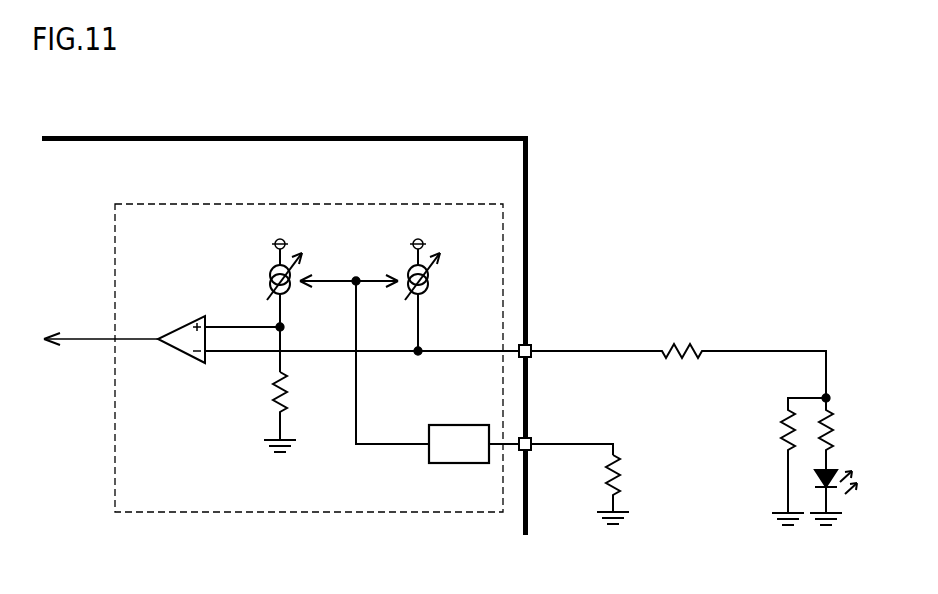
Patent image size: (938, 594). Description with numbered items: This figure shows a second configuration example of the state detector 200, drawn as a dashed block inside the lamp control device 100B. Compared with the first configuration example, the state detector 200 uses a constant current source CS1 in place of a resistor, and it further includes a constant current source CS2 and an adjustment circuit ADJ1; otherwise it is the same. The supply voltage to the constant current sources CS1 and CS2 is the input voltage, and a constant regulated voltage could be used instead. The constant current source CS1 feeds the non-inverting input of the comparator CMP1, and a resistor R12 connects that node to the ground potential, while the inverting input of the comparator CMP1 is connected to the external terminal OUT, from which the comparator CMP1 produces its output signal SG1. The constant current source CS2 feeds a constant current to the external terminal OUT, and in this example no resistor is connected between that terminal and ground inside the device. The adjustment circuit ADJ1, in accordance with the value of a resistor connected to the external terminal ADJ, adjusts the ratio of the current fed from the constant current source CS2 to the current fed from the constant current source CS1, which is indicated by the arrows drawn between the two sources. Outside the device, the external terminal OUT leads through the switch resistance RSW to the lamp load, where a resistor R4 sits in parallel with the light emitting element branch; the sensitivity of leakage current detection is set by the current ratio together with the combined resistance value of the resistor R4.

The lamp control device 100B is at (421, 137).
The state detector 200 is at (373, 203).
The comparator CMP1 is at (190, 316).
The constant current source CS1 is at (291, 285).
The constant current source CS2 is at (429, 285).
The resistor R12 is at (296, 386).
The adjustment circuit ADJ1 is at (460, 425).
The output signal SG1 is at (101, 331).
The external terminal OUT is at (531, 357).
The external terminal ADJ is at (531, 449).
The resistance value of the switch RSW is at (682, 342).
The resistor R4 is at (777, 440).